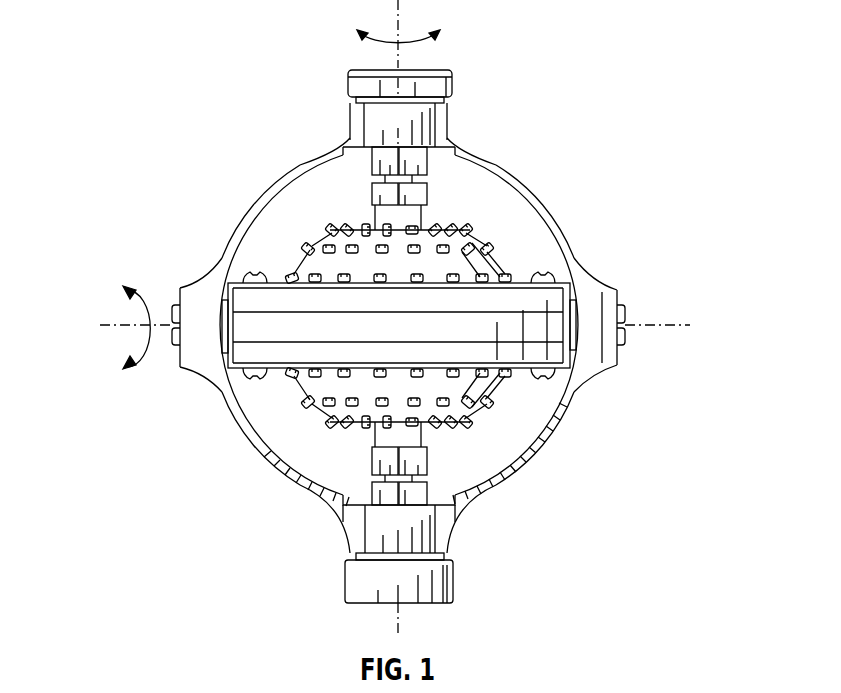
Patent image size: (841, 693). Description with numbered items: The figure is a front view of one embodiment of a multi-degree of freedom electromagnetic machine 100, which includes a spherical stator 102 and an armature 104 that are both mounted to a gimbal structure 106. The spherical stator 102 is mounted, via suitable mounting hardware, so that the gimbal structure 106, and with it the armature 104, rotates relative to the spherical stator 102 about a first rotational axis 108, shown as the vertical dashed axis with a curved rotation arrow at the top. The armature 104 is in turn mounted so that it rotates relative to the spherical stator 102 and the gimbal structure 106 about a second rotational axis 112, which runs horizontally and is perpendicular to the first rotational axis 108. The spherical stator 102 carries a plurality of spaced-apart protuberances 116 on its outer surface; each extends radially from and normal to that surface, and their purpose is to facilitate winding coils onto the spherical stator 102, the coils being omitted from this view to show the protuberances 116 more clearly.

The multi-degree of freedom electromagnetic machine 100 is at (160, 63).
The spherical stator 102 is at (485, 232).
The armature 104 is at (523, 385).
The gimbal structure 106 is at (577, 226).
The first rotational axis 108 is at (400, 27).
The second rotational axis 112 is at (121, 323).
The protuberances 116 is at (432, 230).